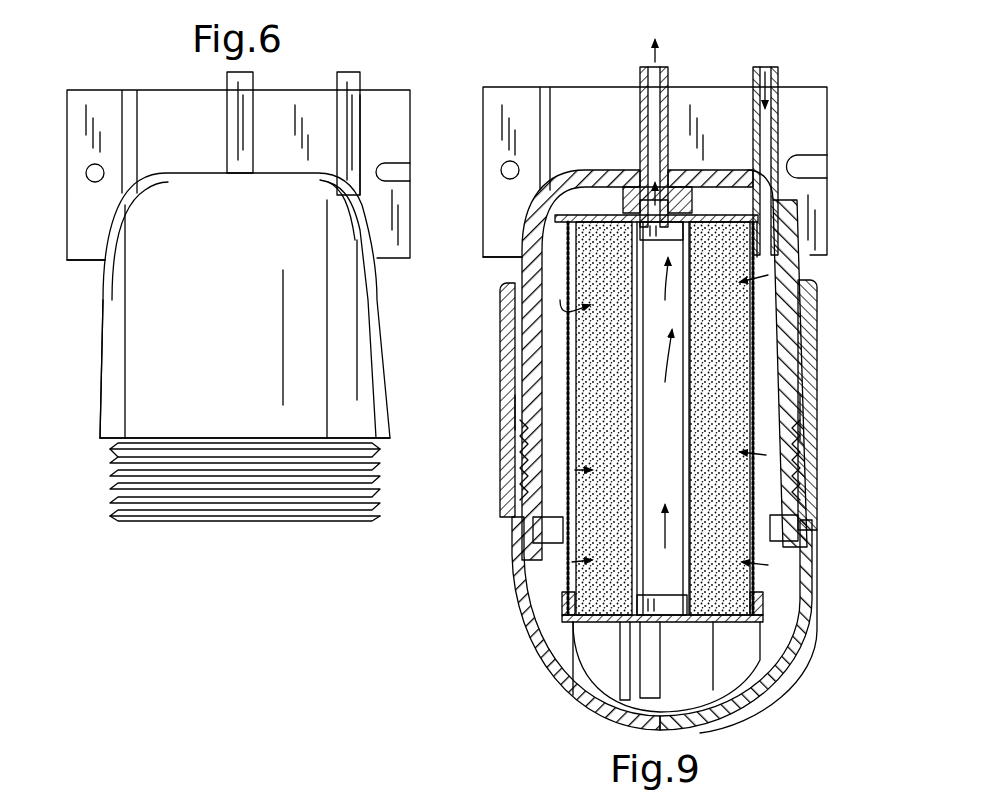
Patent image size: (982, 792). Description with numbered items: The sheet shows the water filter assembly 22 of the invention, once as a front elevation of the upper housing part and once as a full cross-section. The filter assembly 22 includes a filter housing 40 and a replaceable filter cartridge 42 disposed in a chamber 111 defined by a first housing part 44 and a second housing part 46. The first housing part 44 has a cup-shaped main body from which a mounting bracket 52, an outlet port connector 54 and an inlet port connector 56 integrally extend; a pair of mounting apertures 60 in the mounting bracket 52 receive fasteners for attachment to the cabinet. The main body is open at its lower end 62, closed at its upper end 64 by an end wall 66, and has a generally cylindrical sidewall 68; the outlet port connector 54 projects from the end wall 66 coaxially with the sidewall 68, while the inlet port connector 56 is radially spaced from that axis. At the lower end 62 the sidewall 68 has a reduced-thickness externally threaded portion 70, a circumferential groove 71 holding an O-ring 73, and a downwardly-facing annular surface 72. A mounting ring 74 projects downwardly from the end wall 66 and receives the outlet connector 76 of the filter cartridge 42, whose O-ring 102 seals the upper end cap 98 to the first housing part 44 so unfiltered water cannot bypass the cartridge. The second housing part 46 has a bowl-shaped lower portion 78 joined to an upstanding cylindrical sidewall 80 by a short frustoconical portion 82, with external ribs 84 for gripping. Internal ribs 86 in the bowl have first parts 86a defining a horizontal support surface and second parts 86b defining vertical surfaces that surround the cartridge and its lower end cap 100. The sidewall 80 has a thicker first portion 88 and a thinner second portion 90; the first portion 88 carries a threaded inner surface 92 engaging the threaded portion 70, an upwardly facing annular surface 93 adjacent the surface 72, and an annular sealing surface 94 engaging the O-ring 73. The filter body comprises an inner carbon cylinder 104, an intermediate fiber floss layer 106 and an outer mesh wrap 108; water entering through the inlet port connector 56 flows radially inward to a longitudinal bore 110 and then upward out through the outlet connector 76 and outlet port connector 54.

In FIG. 9, the filter assembly 22 is at (835, 272).
In FIG. 9, the filter housing 40 is at (497, 545).
In FIG. 9, the replaceable filter cartridge 42 is at (722, 452).
In FIG. 6, the first housing part 44 is at (100, 325).
In FIG. 9, the first housing part 44 is at (731, 83).
In FIG. 9, the second housing part 46 is at (500, 695).
In FIG. 6, the mounting bracket 52 is at (176, 97).
In FIG. 9, the mounting bracket 52 is at (817, 108).
In FIG. 6, the outlet port connector 54 is at (256, 80).
In FIG. 9, the outlet port connector 54 is at (640, 80).
In FIG. 6, the inlet port connector 56 is at (362, 78).
In FIG. 9, the inlet port connector 56 is at (778, 76).
In FIG. 6, the mounting apertures 60 is at (88, 183).
In FIG. 9, the mounting apertures 60 is at (500, 171).
In FIG. 6, the lower end 62 is at (118, 521).
In FIG. 9, the lower end 62 is at (520, 510).
In FIG. 6, the upper end 64 is at (107, 220).
In FIG. 9, the upper end 64 is at (525, 210).
In FIG. 6, the end wall 66 is at (205, 172).
In FIG. 9, the end wall 66 is at (608, 168).
In FIG. 6, the sidewall 68 is at (100, 362).
In FIG. 9, the sidewall 68 is at (812, 310).
In FIG. 6, the externally threaded portion 70 is at (115, 490).
In FIG. 9, the externally threaded portion 70 is at (793, 508).
In FIG. 9, the circumferential groove 71 is at (515, 395).
In FIG. 6, the downwardly-facing annular surface 72 is at (110, 445).
In FIG. 9, the downwardly-facing annular surface 72 is at (518, 420).
In FIG. 6, the O-ring 73 is at (112, 452).
In FIG. 9, the O-ring 73 is at (520, 450).
In FIG. 9, the mounting ring 74 is at (700, 198).
In FIG. 9, the outlet connector 76 is at (626, 212).
In FIG. 9, the bowl-shaped lower portion 78 is at (700, 722).
In FIG. 9, the sidewall 80 is at (805, 395).
In FIG. 9, the frustoconical portion 82 is at (790, 560).
In FIG. 9, the external ribs 84 is at (815, 630).
In FIG. 9, the ribs 86 is at (647, 700).
In FIG. 9, the first part 86a is at (745, 663).
In FIG. 9, the second part 86b is at (843, 597).
In FIG. 9, the first portion 88 is at (520, 492).
In FIG. 9, the second portion 90 is at (500, 318).
In FIG. 9, the threaded inner surface 92 is at (800, 478).
In FIG. 9, the upwardly facing annular surface 93 is at (520, 432).
In FIG. 9, the annular sealing surface 94 is at (520, 472).
In FIG. 9, the upper end cap 98 is at (765, 240).
In FIG. 9, the lower end cap 100 is at (765, 680).
In FIG. 9, the O-ring 102 is at (684, 170).
In FIG. 9, the inner cylinder of compressed or extruded carbon 104 is at (610, 400).
In FIG. 9, the intermediate layer of fiber floss 106 is at (590, 322).
In FIG. 9, the outer mesh wrap 108 is at (600, 485).
In FIG. 9, the longitudinal bore 110 is at (657, 567).
In FIG. 9, the chamber 111 is at (767, 400).